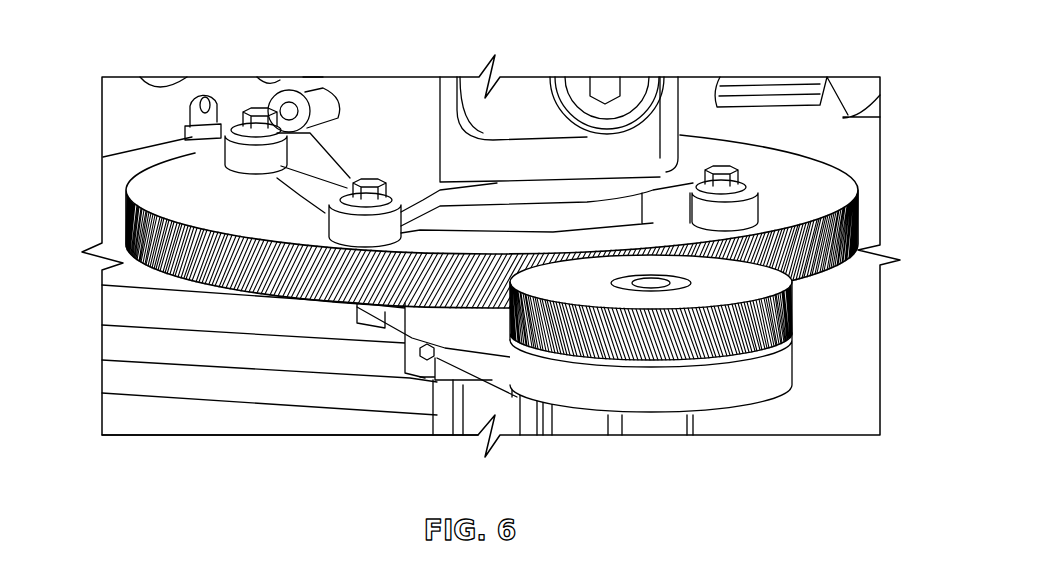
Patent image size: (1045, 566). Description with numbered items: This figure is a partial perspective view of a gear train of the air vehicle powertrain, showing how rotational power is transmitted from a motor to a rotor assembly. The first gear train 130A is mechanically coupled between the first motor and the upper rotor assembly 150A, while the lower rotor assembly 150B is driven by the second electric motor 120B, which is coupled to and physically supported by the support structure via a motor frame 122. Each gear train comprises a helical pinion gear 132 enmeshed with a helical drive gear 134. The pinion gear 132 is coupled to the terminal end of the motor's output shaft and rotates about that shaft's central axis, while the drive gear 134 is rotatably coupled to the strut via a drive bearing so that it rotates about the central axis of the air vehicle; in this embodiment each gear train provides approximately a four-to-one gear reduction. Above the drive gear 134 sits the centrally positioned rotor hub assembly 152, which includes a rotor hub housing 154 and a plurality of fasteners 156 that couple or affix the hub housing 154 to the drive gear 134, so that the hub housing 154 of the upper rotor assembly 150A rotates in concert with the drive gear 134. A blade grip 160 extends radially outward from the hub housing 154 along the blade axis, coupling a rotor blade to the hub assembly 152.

The upper rotor assembly 150A is at (151, 32).
The lower rotor assembly 150B is at (95, 377).
The fasteners 156 is at (253, 107).
The rotor hub assembly 152 is at (667, 115).
The rotor hub housing 154 is at (607, 105).
The blade grip 160 is at (850, 88).
The helical drive gear 134 is at (843, 222).
The helical pinion gear 132 is at (775, 313).
The first gear train 130A is at (763, 325).
The motor frame 122 is at (708, 400).
The second electric motor 120B is at (210, 362).